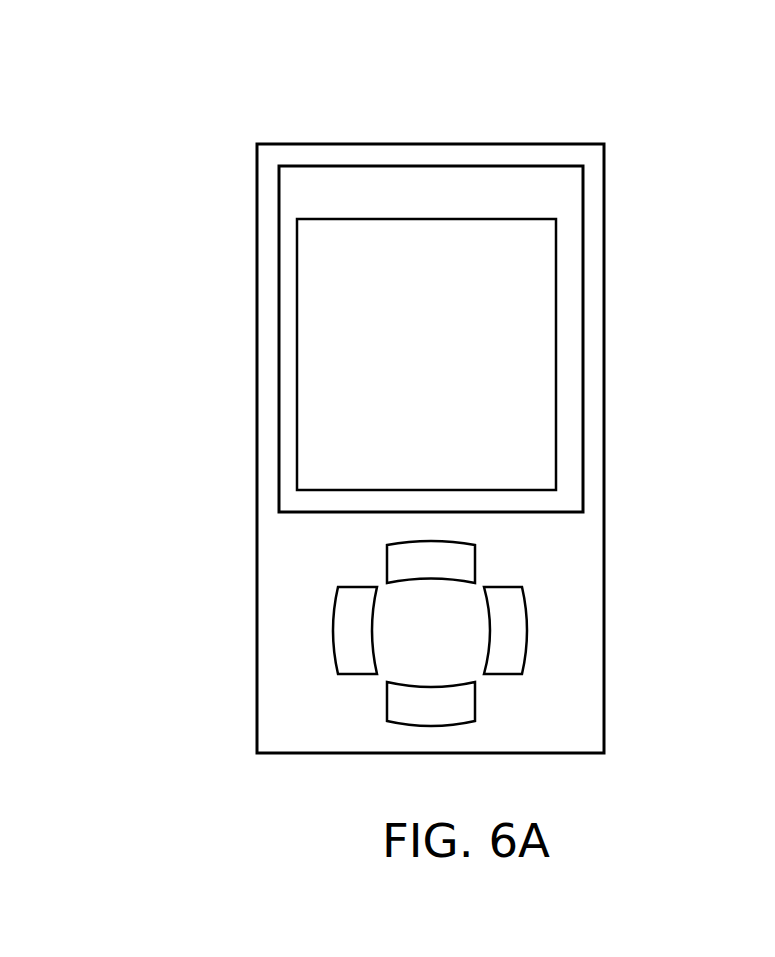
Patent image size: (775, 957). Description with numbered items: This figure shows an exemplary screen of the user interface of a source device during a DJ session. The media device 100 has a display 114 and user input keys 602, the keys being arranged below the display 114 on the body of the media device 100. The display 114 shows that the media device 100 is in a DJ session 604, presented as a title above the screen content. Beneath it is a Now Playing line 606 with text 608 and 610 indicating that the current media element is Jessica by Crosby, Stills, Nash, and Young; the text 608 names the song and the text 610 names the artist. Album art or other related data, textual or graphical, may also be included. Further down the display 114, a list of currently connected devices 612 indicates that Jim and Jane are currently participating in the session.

The media device 100 is at (406, 143).
The display 114 is at (577, 247).
The user input keys 602 is at (510, 628).
The DJ session 604 is at (510, 190).
The Now Playing line 606 is at (302, 242).
The text 608 is at (323, 268).
The text 610 is at (528, 275).
The list of currently connected devices 612 is at (322, 433).